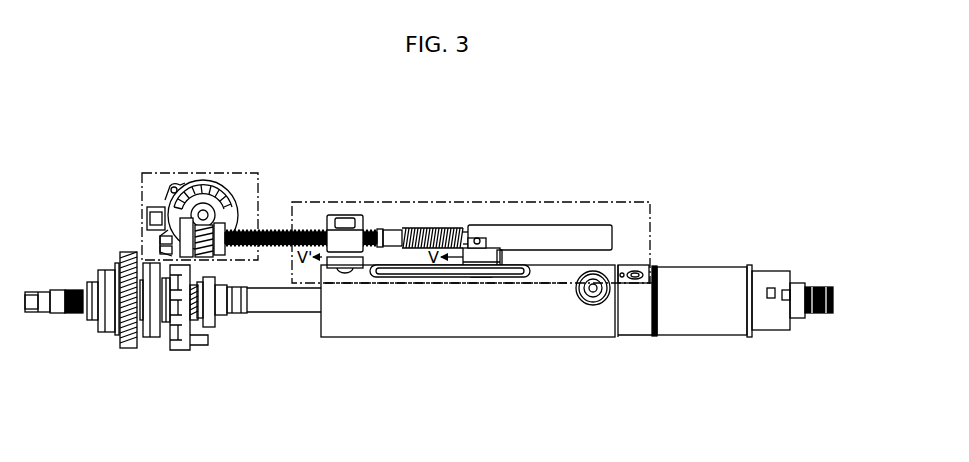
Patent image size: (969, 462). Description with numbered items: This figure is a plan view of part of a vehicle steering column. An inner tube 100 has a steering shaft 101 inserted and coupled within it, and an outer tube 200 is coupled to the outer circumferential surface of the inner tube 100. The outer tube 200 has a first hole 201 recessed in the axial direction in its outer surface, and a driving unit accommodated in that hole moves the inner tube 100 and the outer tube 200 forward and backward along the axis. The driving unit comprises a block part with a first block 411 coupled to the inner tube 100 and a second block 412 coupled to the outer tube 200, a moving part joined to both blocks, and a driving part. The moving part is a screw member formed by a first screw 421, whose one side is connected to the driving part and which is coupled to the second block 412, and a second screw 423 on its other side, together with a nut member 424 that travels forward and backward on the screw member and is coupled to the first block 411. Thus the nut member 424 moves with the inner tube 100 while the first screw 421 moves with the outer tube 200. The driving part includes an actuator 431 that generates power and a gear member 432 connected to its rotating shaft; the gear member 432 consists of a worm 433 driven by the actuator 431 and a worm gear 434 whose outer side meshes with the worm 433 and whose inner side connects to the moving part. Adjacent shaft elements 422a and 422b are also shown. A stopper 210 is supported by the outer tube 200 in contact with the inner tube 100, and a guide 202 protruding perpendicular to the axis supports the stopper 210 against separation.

The inner tube 100 is at (752, 345).
The steering shaft 101 is at (822, 318).
The outer tube 200 is at (479, 350).
The first hole 201 is at (443, 272).
The guide 202 is at (602, 306).
The stopper 210 is at (590, 306).
The first block 411 is at (482, 257).
The second block 412 is at (350, 240).
The first screw 421 is at (288, 245).
The first gear 422a is at (262, 245).
The second shaft 422b is at (442, 228).
The second screw 423 is at (427, 230).
The nut member 424 is at (567, 232).
The actuator 431 is at (175, 176).
The gear member 432 is at (210, 161).
The worm 433 is at (197, 182).
The worm gear 434 is at (217, 182).